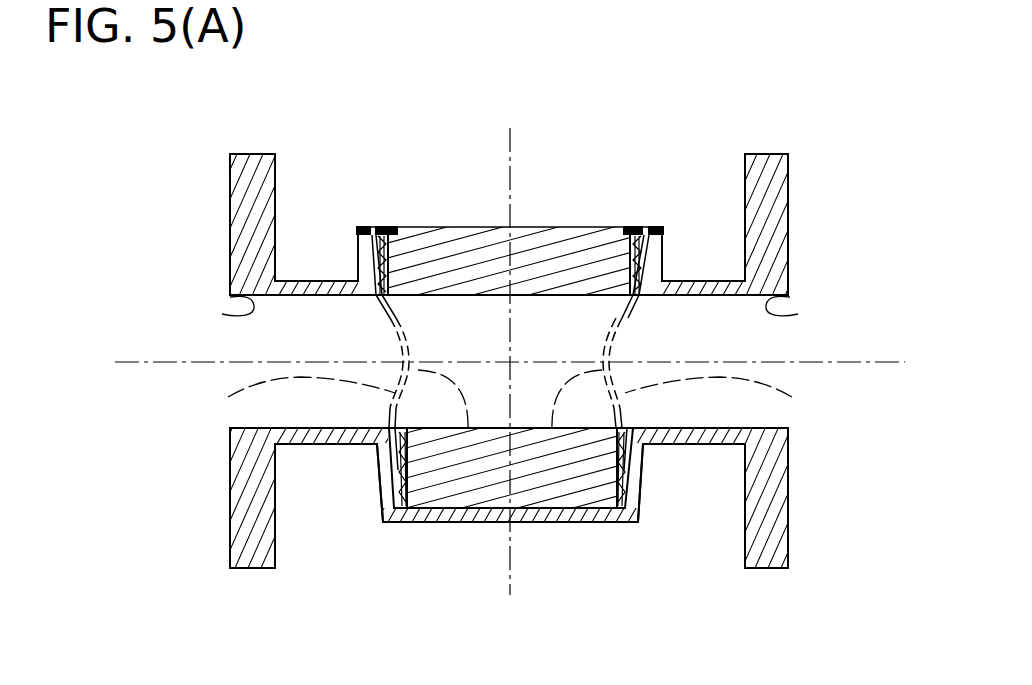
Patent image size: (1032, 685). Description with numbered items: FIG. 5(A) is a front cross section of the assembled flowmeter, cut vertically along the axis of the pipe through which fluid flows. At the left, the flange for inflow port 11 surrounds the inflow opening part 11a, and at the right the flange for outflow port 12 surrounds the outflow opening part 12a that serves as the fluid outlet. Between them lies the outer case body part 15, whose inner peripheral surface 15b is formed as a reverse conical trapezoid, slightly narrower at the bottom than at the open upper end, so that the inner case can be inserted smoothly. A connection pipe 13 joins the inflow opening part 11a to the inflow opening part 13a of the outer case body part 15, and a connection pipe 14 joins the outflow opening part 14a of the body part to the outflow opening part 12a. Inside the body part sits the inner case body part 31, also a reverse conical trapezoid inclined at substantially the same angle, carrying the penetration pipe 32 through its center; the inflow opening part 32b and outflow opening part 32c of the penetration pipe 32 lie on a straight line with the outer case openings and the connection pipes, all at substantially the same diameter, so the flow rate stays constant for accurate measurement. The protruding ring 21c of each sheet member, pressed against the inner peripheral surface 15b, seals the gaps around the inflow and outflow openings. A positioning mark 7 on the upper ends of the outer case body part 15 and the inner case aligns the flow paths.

The positioning mark 7 is at (388, 226).
The flange for inflow port 11 is at (230, 217).
The inflow opening part 11a is at (222, 314).
The flange for outflow port 12 is at (788, 217).
The outflow opening part 12a is at (798, 314).
The connection pipe 13 is at (310, 445).
The inflow opening part 13a is at (228, 397).
The connection pipe 14 is at (710, 445).
The outflow opening part 14a is at (792, 397).
The outer case body part 15 is at (664, 226).
The inner peripheral surface 15b is at (398, 508).
The protruding ring 21c is at (358, 265).
The inner case body part 31 is at (562, 227).
The penetration pipe 32 is at (454, 303).
The inflow opening part 32b is at (468, 450).
The outflow opening part 32c is at (552, 450).